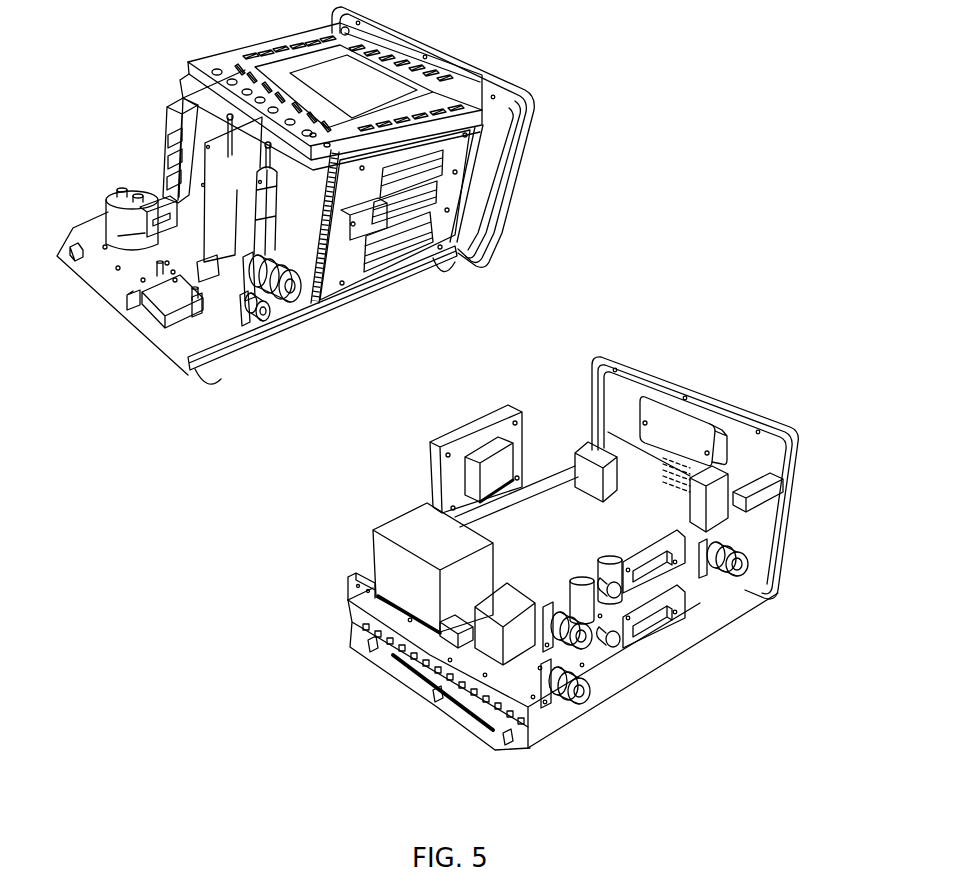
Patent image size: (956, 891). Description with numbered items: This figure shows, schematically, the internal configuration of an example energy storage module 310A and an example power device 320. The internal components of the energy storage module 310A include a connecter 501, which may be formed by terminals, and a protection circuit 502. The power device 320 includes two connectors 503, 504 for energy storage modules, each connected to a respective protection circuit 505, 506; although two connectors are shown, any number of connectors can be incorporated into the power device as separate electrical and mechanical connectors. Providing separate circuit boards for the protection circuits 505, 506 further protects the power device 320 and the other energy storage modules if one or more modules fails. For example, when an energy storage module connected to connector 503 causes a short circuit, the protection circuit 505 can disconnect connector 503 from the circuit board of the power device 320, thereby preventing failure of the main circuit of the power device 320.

The energy storage module 310A is at (530, 112).
The power device 320 is at (708, 394).
The connecter 501 is at (270, 297).
The protection circuit 502 is at (237, 272).
The connector 503 is at (600, 662).
The connector 504 is at (600, 708).
The protection circuit 505 is at (723, 585).
The protection circuit 506 is at (672, 620).